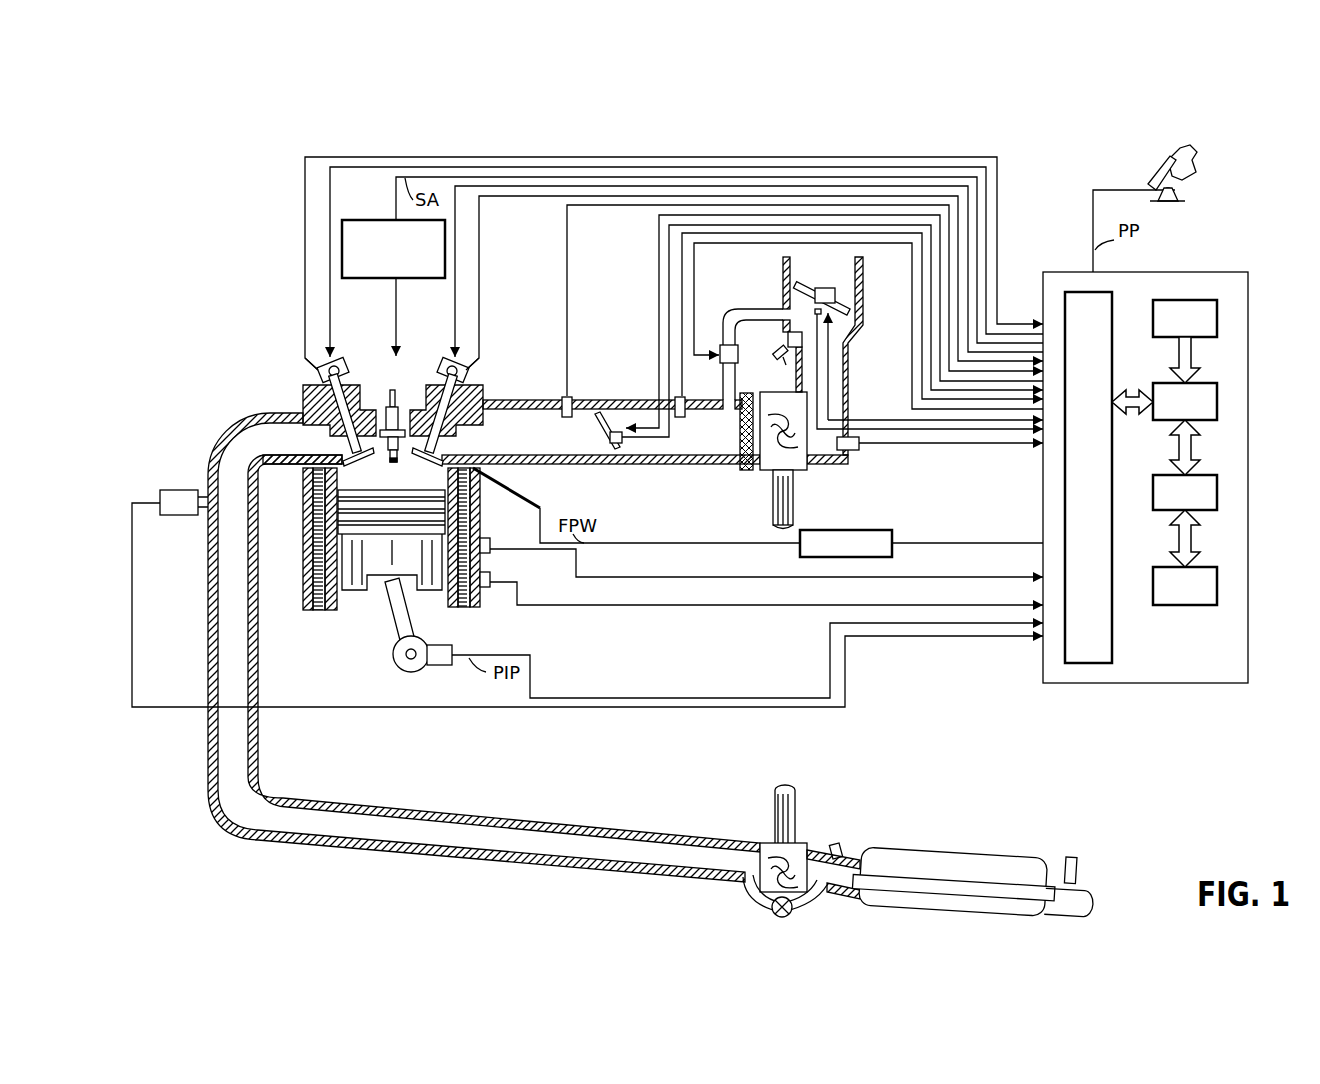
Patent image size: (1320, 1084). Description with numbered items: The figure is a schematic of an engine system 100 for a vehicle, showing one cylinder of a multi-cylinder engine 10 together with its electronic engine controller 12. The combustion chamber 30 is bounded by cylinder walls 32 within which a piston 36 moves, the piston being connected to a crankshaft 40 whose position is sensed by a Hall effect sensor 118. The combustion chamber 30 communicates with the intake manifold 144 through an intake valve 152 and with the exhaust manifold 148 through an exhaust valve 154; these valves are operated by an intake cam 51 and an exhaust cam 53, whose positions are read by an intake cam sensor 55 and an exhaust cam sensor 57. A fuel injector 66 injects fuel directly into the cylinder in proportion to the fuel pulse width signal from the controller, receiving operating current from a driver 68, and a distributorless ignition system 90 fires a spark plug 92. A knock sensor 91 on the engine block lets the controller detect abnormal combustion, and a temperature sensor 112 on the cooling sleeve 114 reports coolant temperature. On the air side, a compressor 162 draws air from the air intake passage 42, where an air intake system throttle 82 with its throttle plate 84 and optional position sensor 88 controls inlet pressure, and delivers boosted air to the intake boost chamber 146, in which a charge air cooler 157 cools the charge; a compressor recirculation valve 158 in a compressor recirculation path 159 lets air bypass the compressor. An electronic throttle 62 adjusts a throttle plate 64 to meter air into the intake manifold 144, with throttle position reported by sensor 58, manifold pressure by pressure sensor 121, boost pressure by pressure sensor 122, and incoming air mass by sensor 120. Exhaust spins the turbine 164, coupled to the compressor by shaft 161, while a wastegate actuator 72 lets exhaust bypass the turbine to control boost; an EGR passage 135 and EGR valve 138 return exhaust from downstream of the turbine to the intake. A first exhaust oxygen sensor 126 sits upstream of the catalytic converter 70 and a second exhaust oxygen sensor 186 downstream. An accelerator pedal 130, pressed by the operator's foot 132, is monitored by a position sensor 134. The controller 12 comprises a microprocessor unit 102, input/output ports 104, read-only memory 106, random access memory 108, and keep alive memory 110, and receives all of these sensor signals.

The engine 10 is at (246, 346).
The electronic engine controller 12 is at (1248, 272).
The combustion chamber 30 is at (390, 477).
The cylinder walls 32 is at (343, 597).
The piston 36 is at (377, 563).
The crankshaft 40 is at (403, 675).
The air intake passage 42 is at (830, 274).
The intake cam 51 is at (450, 358).
The exhaust cam 53 is at (336, 358).
The intake cam sensor 55 is at (467, 372).
The exhaust cam sensor 57 is at (318, 368).
The throttle position sensor 58 is at (625, 446).
The electronic throttle 62 is at (604, 409).
The throttle plate 64 is at (606, 410).
The fuel injector 66 is at (500, 488).
The driver 68 is at (892, 549).
The catalytic converter 70 is at (860, 900).
The wastegate actuator 72 is at (772, 906).
The air intake system throttle 82 is at (797, 286).
The throttle plate 84 is at (798, 279).
The position sensor 88 is at (785, 296).
The distributorless ignition system 90 is at (355, 220).
The knock sensor 91 is at (492, 545).
The spark plug 92 is at (398, 384).
The engine system 100 is at (172, 191).
The microprocessor unit 102 is at (1217, 400).
The input/output ports 104 is at (1112, 300).
The read-only memory 106 is at (1217, 312).
The random access memory 108 is at (1217, 490).
The keep alive memory 110 is at (1217, 583).
The temperature sensor 112 is at (492, 576).
The cooling sleeve 114 is at (478, 592).
The Hall effect sensor 118 is at (438, 666).
The air mass sensor 120 is at (854, 450).
The pressure sensor 121 is at (565, 393).
The pressure sensor 122 is at (683, 396).
The first exhaust oxygen sensor 126 is at (158, 500).
The accelerator pedal 130 is at (1148, 172).
The foot 132 is at (1200, 160).
The position sensor 134 is at (1180, 193).
The EGR passage 135 is at (786, 362).
The EGR valve 138 is at (788, 340).
The intake manifold 144 is at (541, 445).
The intake boost chamber 146 is at (708, 445).
The exhaust manifold 148 is at (291, 450).
The intake valve 152 is at (430, 452).
The exhaust valve 154 is at (356, 452).
The charge air cooler 157 is at (742, 470).
The compressor recirculation valve 158 is at (723, 345).
The compressor recirculation path 159 is at (738, 386).
The shaft 161 is at (773, 490).
The compressor 162 is at (800, 470).
The turbine 164 is at (762, 843).
The second exhaust oxygen sensor 186 is at (1072, 857).